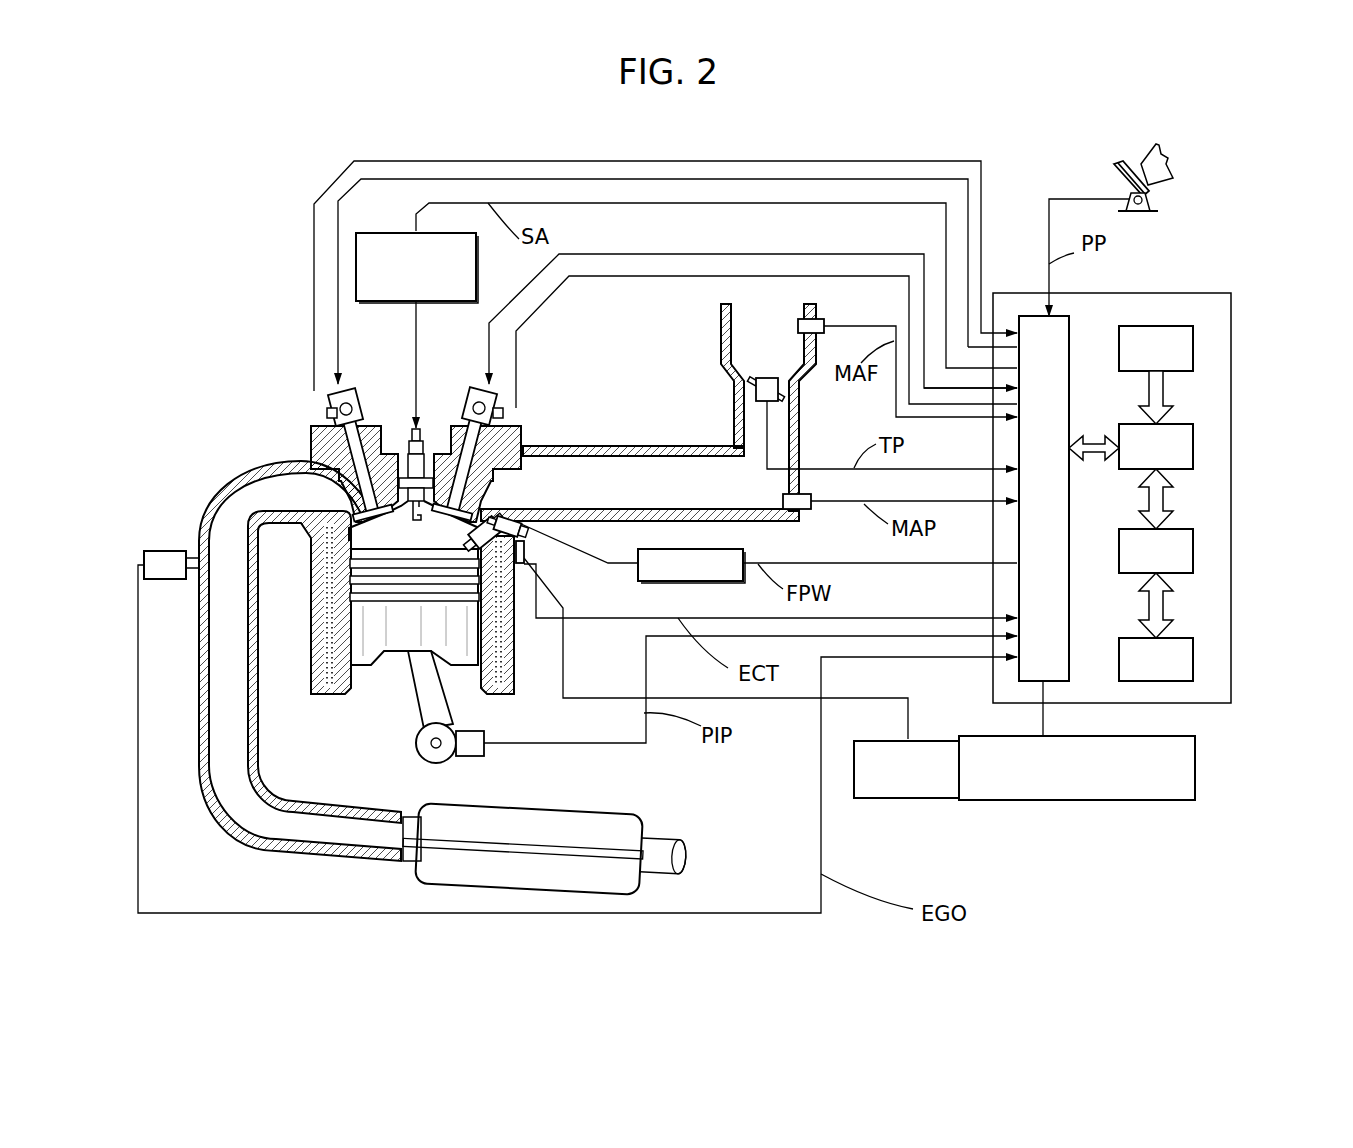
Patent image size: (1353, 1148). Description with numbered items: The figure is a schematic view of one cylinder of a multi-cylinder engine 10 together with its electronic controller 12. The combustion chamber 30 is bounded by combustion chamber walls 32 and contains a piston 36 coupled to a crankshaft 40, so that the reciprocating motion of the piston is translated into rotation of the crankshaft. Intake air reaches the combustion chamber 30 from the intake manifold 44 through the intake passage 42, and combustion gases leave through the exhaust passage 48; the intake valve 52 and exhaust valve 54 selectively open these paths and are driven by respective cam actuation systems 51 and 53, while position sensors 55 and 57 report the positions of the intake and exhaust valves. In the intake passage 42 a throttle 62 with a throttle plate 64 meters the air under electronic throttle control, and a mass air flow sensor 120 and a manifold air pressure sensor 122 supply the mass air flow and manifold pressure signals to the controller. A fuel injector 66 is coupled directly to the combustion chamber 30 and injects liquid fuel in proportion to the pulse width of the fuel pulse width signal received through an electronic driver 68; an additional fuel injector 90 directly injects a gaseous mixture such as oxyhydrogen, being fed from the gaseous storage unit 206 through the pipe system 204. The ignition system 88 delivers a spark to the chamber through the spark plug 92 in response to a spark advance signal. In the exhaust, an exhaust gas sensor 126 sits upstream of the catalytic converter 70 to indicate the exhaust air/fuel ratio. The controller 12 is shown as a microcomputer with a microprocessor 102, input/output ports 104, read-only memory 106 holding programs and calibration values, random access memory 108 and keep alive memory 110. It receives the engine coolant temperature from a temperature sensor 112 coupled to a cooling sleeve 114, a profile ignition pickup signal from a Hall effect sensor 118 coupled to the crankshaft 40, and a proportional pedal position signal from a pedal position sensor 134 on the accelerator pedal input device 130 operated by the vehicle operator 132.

The engine 10 is at (238, 372).
The electronic controller 12 is at (1220, 292).
The combustion chamber 30 is at (410, 530).
The combustion chamber walls 32 is at (353, 670).
The piston 36 is at (395, 637).
The crankshaft 40 is at (425, 763).
The intake passage 42 is at (781, 353).
The intake manifold 44 is at (713, 498).
The exhaust passage 48 is at (291, 500).
The cam actuation system 51 is at (472, 390).
The intake valve 52 is at (457, 496).
The cam actuation system 53 is at (348, 390).
The exhaust valve 54 is at (370, 497).
The position sensor 55 is at (502, 412).
The position sensor 57 is at (326, 412).
The throttle 62 is at (778, 385).
The throttle plate 64 is at (748, 380).
The fuel injector 66 is at (506, 532).
The electronic driver 68 is at (667, 580).
The catalytic converter 70 is at (598, 815).
The ignition system 88 is at (370, 232).
The additional fuel injector 90 is at (507, 528).
The spark plug 92 is at (420, 440).
The microprocessor 102 is at (1195, 438).
The input/output ports 104 is at (1070, 327).
The read-only memory 106 is at (1195, 345).
The random access memory 108 is at (1192, 548).
The keep alive memory 110 is at (1192, 653).
The temperature sensor 112 is at (520, 562).
The cooling sleeve 114 is at (497, 635).
The Hall effect sensor 118 is at (470, 755).
The mass air flow sensor 120 is at (817, 317).
The manifold air pressure sensor 122 is at (803, 510).
The exhaust gas sensor 126 is at (143, 553).
The input device 130 is at (1115, 172).
The vehicle operator 132 is at (1163, 158).
The pedal position sensor 134 is at (1150, 198).
The pipe system 204 is at (907, 797).
The gaseous storage unit 206 is at (1055, 798).